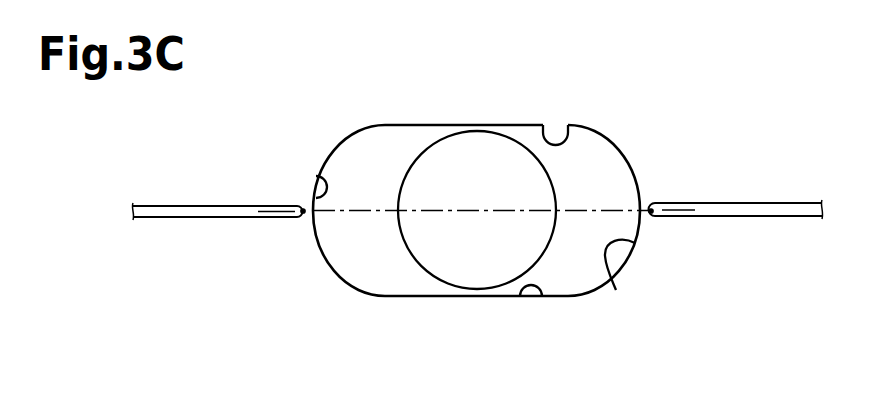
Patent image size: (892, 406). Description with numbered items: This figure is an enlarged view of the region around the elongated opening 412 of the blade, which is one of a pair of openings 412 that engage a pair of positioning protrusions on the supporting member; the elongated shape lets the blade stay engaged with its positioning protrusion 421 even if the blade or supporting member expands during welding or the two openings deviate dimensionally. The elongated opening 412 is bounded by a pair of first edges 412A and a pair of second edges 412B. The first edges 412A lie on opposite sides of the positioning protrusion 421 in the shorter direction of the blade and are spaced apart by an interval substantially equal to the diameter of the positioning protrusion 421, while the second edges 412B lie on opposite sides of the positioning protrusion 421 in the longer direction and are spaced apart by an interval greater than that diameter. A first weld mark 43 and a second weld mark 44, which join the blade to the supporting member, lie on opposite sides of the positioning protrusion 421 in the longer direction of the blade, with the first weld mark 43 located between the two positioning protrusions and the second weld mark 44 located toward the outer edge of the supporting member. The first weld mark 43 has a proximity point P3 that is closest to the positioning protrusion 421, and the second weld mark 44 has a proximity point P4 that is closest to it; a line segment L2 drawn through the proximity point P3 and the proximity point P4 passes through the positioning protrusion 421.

The opening 412 is at (380, 124).
The positioning protrusion 421 is at (481, 160).
The first edge 412A is at (566, 126).
The second edge 412B is at (324, 180).
The line segment L2 is at (612, 209).
The first weld mark 43 is at (733, 204).
The second weld mark 44 is at (213, 207).
The proximity point P3 is at (651, 213).
The proximity point P4 is at (303, 213).